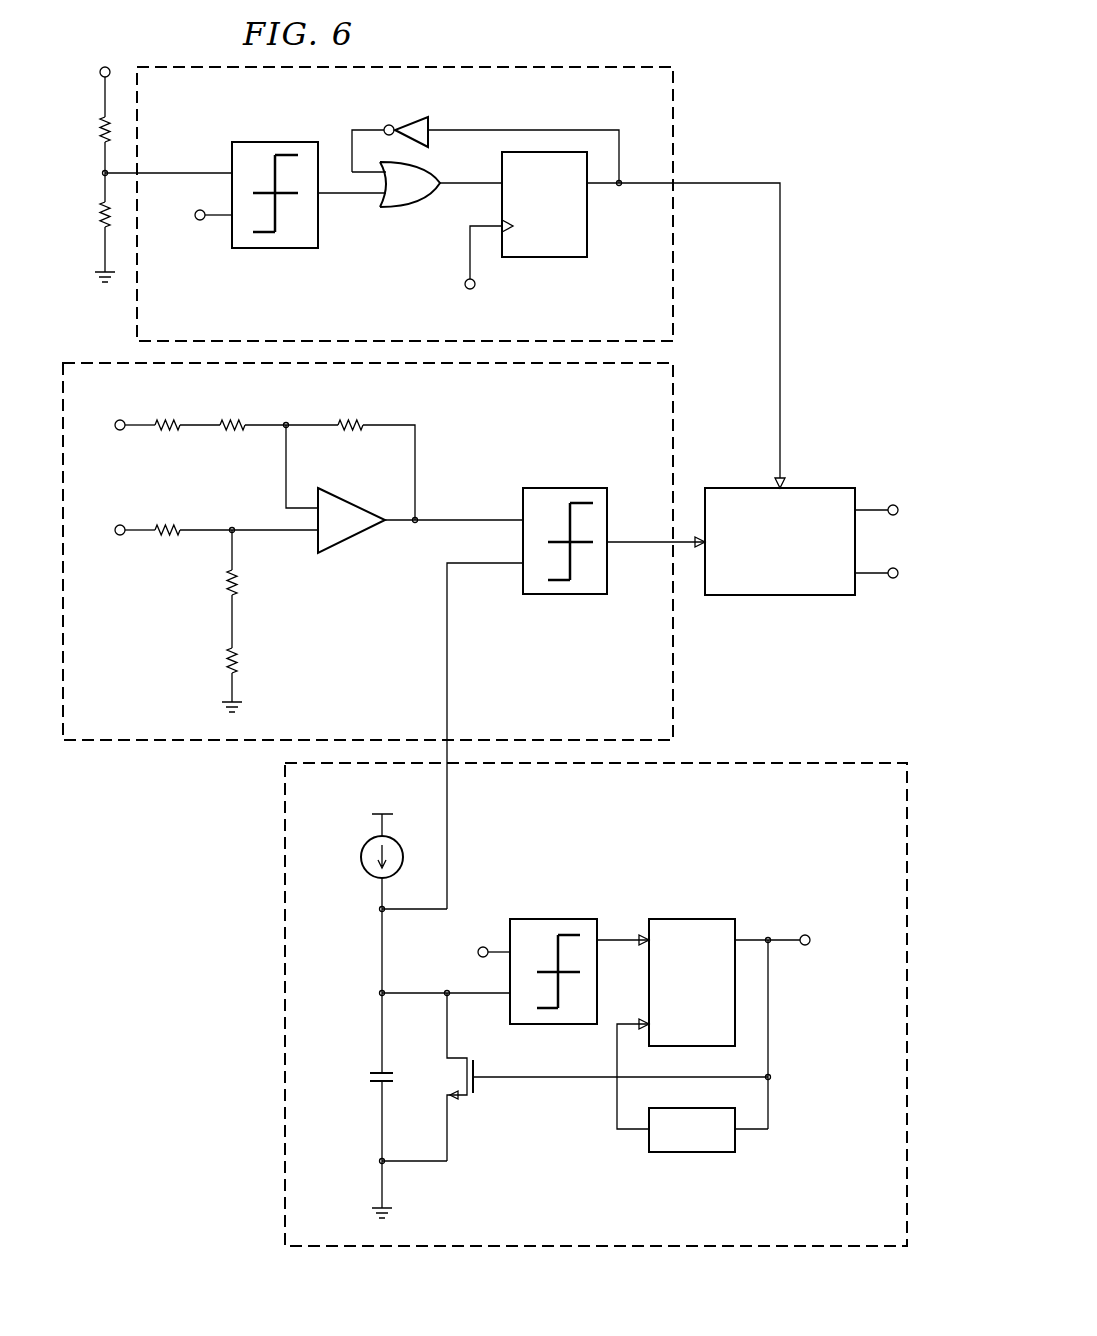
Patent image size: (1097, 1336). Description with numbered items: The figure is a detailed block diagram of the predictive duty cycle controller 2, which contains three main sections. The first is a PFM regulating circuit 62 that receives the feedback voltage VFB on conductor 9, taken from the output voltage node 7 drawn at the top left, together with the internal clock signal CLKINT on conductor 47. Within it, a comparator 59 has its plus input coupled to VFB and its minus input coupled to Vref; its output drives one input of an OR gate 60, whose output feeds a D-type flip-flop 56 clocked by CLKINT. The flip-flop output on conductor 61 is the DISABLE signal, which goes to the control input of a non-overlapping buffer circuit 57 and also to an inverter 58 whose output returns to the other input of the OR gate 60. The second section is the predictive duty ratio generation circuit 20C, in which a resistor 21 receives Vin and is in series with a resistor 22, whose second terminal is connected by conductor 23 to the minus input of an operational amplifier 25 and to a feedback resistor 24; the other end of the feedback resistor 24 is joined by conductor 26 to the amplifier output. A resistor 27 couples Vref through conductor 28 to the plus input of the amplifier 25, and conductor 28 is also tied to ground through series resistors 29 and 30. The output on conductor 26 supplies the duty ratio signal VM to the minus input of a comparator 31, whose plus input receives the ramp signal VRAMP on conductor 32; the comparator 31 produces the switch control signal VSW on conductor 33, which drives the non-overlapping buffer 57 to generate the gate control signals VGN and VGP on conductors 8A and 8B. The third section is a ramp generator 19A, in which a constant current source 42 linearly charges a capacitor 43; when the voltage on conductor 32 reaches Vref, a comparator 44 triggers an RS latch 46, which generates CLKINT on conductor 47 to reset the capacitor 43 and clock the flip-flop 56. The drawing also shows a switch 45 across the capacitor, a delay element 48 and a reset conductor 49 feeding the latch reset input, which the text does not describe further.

The predictive duty cycle controller 2 is at (823, 73).
The output voltage terminal Vout 7 is at (103, 92).
The conductor 9 is at (220, 172).
The ramp generator 19A is at (284, 1141).
The predictive duty ratio generation circuit 20C is at (678, 443).
The resistor 21 is at (164, 432).
The resistor 22 is at (229, 432).
The conductor 23 is at (277, 422).
The feedback resistor 24 is at (350, 432).
The operational amplifier 25 is at (340, 545).
The conductor 26 is at (483, 520).
The resistor 27 is at (164, 537).
The conductor 28 is at (263, 528).
The resistor 29 is at (238, 587).
The resistor 30 is at (238, 665).
The comparator 31 is at (580, 487).
The conductor 32 is at (503, 565).
The conductor 33 is at (633, 547).
The constant current source 42 is at (362, 850).
The capacitor 43 is at (367, 1078).
The comparator 44 is at (542, 918).
The transistor switch 45 is at (477, 1088).
The RS latch 46 is at (693, 918).
The conductor 47 is at (468, 252).
The delay element 48 is at (693, 1153).
The reset line V49 49 is at (615, 1047).
The D-type flip-flop 56 is at (588, 212).
The non-overlapping buffer circuit 57 is at (793, 595).
The inverter 58 is at (402, 119).
The comparator 59 is at (266, 142).
The OR gate 60 is at (392, 205).
The conductor 61 is at (638, 182).
The PFM regulating circuit 62 is at (678, 113).
The conductor 8A is at (870, 508).
The conductor 8B is at (872, 575).